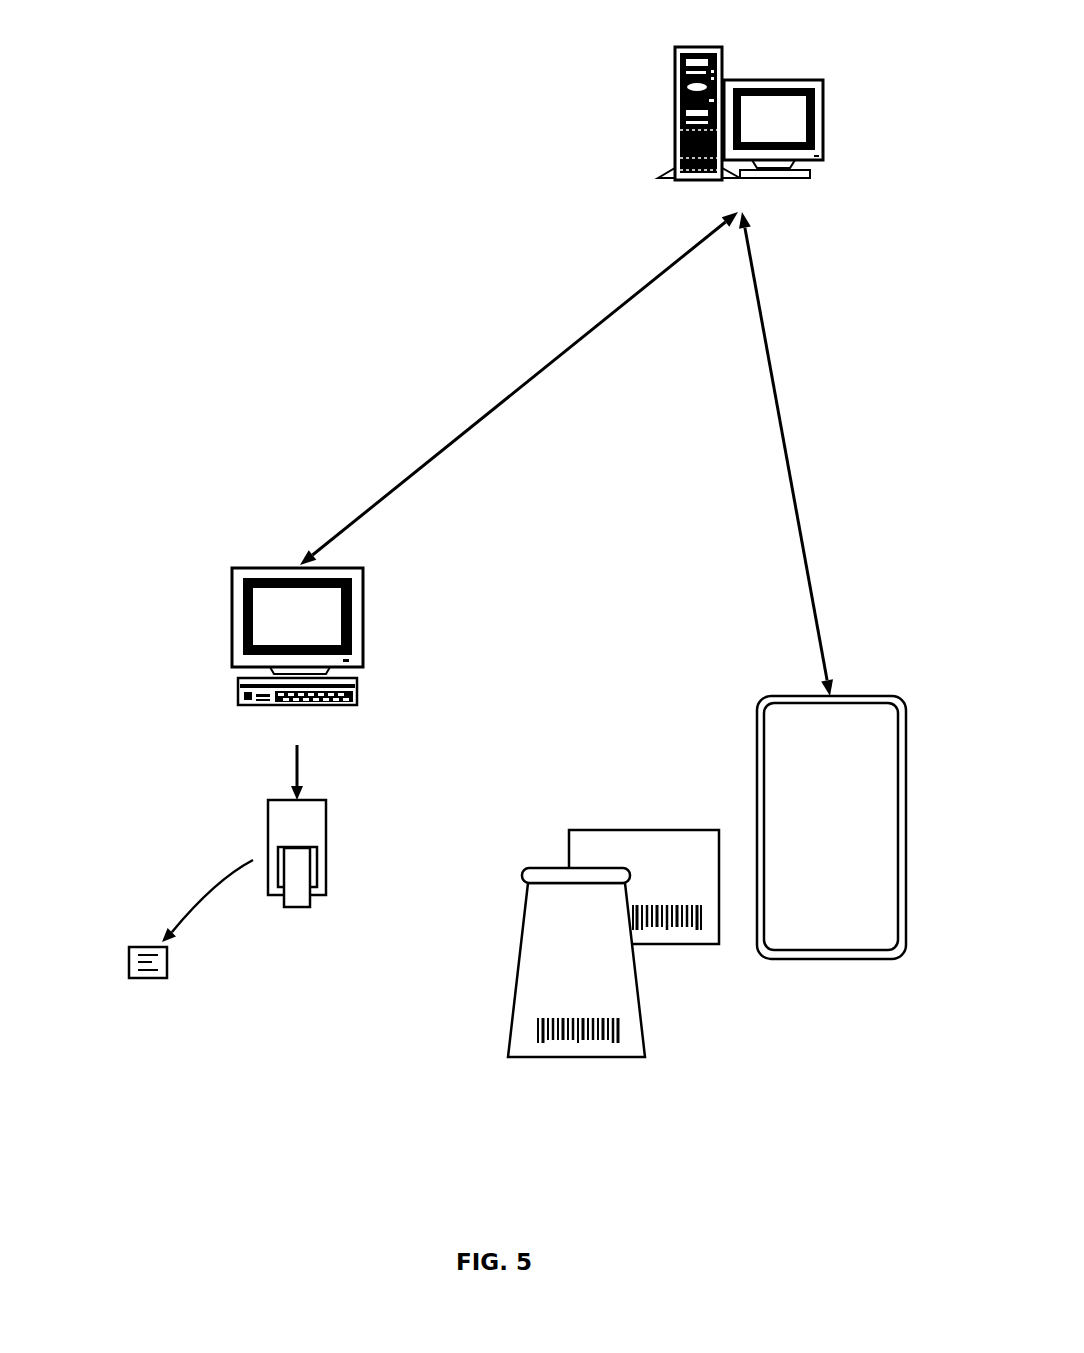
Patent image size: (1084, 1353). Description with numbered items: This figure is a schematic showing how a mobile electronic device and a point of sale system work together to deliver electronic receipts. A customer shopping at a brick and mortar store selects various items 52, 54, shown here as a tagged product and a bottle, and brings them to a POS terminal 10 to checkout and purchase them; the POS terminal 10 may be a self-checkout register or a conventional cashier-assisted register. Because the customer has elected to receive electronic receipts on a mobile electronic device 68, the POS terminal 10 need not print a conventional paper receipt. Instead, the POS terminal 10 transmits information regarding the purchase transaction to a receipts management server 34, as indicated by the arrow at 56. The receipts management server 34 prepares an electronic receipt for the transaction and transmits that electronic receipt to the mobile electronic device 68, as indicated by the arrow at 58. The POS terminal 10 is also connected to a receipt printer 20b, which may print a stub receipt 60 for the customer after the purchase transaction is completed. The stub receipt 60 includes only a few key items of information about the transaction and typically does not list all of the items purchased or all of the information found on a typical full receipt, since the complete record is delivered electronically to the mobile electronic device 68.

The receipts management server 34 is at (786, 47).
The POS terminal 10 is at (280, 524).
The transmission of purchase transaction information 56 is at (494, 378).
The transmission of electronic receipt 58 is at (759, 480).
The receipt printer 20b is at (288, 822).
The stub receipt 60 is at (121, 929).
The item 52 is at (608, 859).
The item 54 is at (552, 963).
The mobile electronic device 68 is at (831, 827).